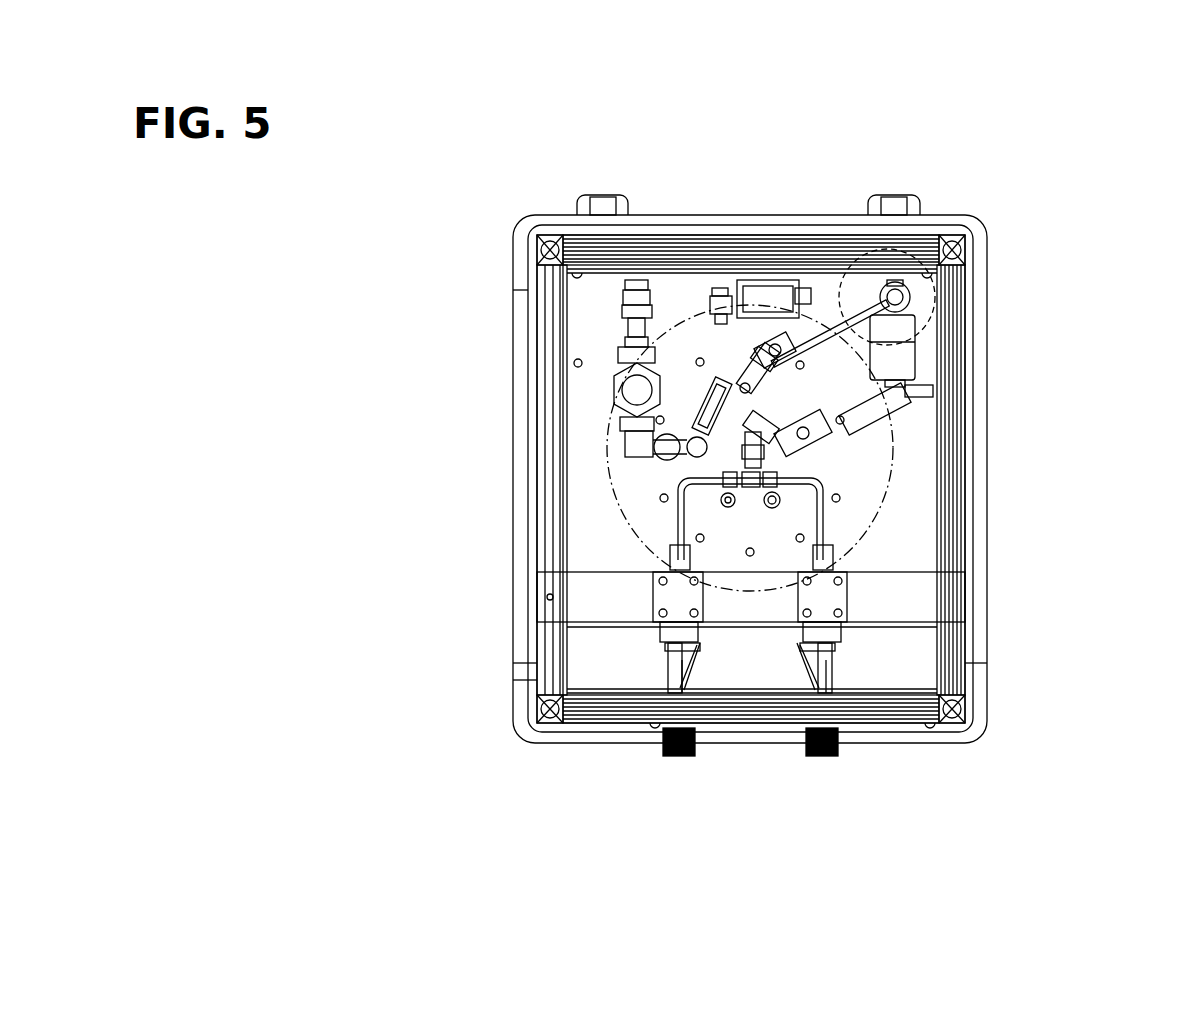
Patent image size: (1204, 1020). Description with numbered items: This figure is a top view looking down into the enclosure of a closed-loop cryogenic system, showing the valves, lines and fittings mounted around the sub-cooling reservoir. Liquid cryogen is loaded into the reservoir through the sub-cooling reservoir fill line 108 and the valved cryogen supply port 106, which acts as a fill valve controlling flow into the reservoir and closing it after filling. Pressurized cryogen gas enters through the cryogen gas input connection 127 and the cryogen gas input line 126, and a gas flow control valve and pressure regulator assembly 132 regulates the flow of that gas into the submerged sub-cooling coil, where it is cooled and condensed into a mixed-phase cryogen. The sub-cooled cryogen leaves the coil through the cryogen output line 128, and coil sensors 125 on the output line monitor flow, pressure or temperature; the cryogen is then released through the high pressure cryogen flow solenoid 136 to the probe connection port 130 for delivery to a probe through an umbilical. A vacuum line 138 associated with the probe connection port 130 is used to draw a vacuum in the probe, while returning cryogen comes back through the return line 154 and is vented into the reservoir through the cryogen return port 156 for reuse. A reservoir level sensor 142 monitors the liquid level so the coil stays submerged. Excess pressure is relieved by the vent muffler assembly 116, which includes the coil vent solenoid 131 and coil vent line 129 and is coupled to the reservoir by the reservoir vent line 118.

The valved cryogen supply port 106 is at (630, 390).
The sub-cooling reservoir fill line 108 is at (622, 310).
The vent muffler assembly 116 is at (923, 288).
The reservoir vent line 118 is at (873, 410).
The coil sensors 125 is at (802, 442).
The cryogen gas input line 126 is at (748, 383).
The cryogen gas input connection 127 is at (718, 303).
The cryogen output line 128 is at (760, 457).
The coil vent line 129 is at (830, 323).
The probe connection port 130 is at (690, 750).
The coil vent solenoid 131 is at (895, 300).
The gas flow control valve and pressure regulator assembly 132 is at (758, 300).
The high pressure cryogen flow solenoid 136 is at (815, 605).
The vacuum line 138 is at (820, 677).
The reservoir level sensor 142 is at (708, 405).
The return line 154 is at (670, 654).
The cryogen return port 156 is at (763, 503).